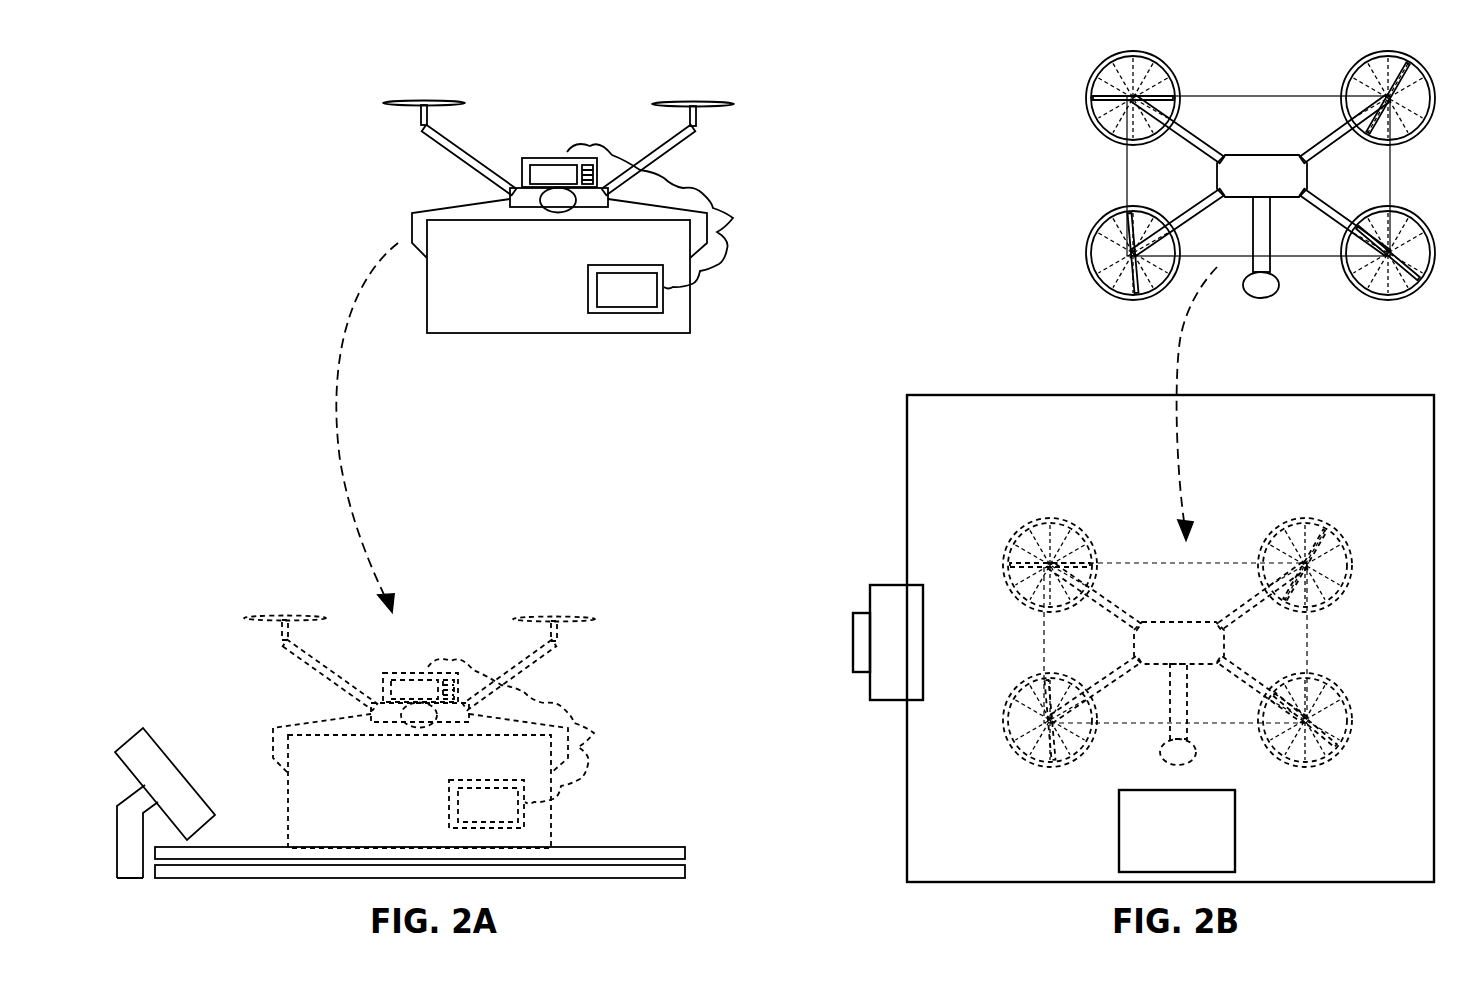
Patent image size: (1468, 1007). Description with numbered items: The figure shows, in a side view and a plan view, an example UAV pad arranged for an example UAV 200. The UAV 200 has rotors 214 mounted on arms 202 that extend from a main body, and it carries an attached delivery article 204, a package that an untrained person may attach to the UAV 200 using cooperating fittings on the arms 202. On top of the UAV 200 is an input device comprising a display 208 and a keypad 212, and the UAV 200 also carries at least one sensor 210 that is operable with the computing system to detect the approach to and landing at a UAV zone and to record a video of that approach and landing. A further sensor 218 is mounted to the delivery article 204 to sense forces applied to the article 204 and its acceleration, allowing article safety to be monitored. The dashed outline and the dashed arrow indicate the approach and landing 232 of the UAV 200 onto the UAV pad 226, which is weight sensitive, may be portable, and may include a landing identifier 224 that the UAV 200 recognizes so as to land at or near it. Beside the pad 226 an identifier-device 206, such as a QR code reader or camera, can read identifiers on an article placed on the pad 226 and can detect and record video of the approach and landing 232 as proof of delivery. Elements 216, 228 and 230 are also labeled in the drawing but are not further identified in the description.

In FIG. 2A, the UAV 200 is at (556, 184).
In FIG. 2A, the arms 202 is at (452, 195).
In FIG. 2A, the article 204 is at (452, 237).
In FIG. 2B, the article 204 is at (1142, 193).
In FIG. 2A, the identifier-device 206 is at (153, 753).
In FIG. 2B, the identifier-device 206 is at (887, 597).
In FIG. 2A, the display 208 is at (542, 170).
In FIG. 2A, the sensor 210 is at (558, 197).
In FIG. 2B, the sensor 210 is at (1252, 283).
In FIG. 2A, the keypad 212 is at (587, 165).
In FIG. 2A, the rotors 214 is at (703, 105).
In FIG. 2B, the rotors 214 is at (1120, 112).
In FIG. 2A, the wireless signal 216 is at (673, 190).
In FIG. 2A, the sensor 218 is at (634, 275).
In FIG. 2B, the landing identifier 224 is at (1133, 851).
In FIG. 2A, the UAV pad 226 is at (685, 852).
In FIG. 2B, the UAV pad 226 is at (925, 475).
In FIG. 2A, the base plate 228 is at (685, 870).
In FIG. 2B, the central frame 230 is at (1232, 180).
In FIG. 2A, the approach and landing 232 is at (353, 297).